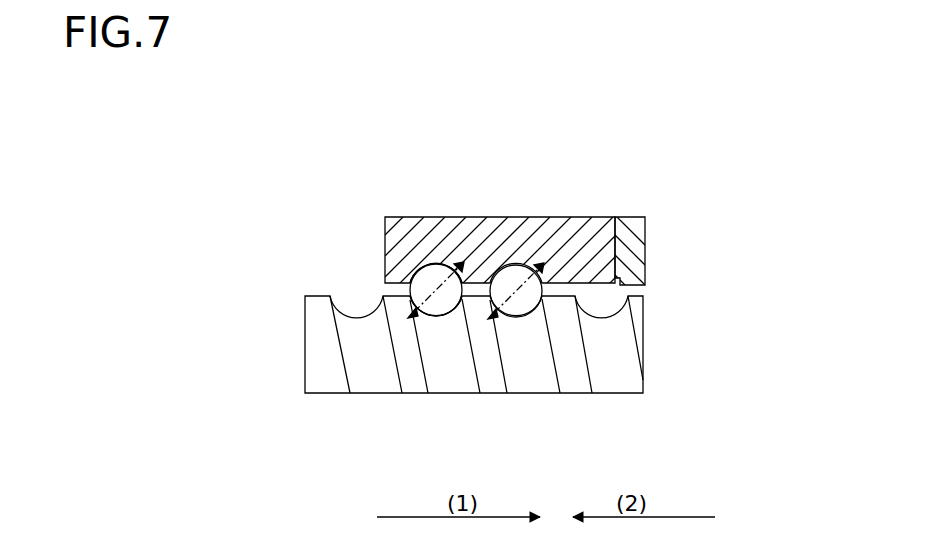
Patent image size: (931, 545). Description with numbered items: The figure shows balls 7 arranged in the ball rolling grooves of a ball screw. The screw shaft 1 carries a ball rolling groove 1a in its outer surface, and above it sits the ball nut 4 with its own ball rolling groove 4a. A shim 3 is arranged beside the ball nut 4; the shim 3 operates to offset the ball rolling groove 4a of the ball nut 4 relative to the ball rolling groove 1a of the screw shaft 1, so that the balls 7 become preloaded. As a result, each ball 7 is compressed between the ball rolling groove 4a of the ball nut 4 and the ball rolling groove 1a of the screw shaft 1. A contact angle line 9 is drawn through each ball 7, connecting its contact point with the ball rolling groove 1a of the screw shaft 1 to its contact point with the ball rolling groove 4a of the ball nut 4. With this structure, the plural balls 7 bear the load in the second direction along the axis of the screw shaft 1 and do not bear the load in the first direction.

The screw shaft 1 is at (437, 377).
The ball rolling groove of the screw shaft 1a is at (442, 318).
The shim 3 is at (632, 232).
The ball nut 4 is at (497, 230).
The ball rolling groove of the ball nut 4a is at (441, 290).
The ball 7 is at (507, 263).
The contact angle line 9 is at (437, 280).